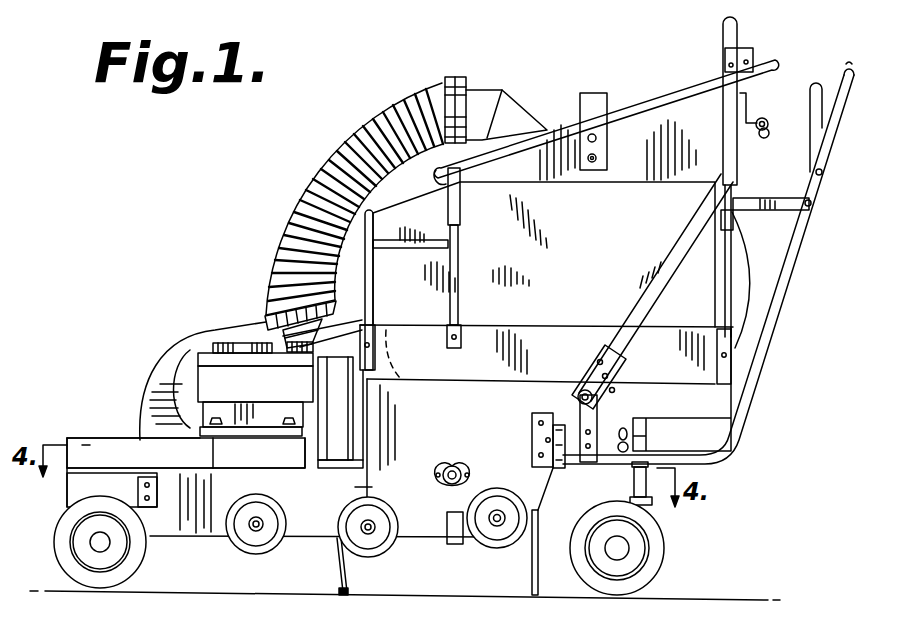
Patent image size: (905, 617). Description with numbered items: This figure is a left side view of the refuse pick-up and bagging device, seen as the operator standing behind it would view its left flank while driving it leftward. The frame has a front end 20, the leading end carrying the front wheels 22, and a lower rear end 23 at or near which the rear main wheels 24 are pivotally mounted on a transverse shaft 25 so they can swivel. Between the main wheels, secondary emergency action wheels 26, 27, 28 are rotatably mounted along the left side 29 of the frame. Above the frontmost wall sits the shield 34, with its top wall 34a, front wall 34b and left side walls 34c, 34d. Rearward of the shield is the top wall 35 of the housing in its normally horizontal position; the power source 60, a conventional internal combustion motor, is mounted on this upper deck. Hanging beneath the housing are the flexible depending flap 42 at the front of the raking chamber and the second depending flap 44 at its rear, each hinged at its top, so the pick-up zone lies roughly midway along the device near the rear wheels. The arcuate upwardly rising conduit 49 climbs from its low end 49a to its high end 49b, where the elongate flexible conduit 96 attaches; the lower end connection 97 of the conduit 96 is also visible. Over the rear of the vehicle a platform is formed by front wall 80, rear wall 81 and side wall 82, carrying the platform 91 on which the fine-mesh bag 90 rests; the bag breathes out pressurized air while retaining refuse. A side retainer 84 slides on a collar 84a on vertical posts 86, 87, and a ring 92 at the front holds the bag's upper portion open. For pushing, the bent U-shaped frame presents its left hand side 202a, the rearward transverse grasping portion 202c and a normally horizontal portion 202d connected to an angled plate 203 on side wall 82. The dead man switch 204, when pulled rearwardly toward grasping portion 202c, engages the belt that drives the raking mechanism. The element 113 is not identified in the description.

The front end 20 is at (66, 497).
The front wheels 22 is at (136, 573).
The lower rear end 23 is at (648, 437).
The rear main wheels 24 is at (664, 570).
The transverse shaft 25 is at (635, 490).
The secondary emergency action wheel 26 is at (247, 495).
The secondary emergency action wheel 27 is at (355, 501).
The secondary emergency action wheel 28 is at (500, 488).
The left side 29 is at (330, 532).
The shield 34 is at (63, 405).
The top wall 34a is at (95, 438).
The front wall 34b is at (66, 438).
The left side wall 34c is at (156, 457).
The left side wall 34d is at (285, 470).
The top wall 35 is at (372, 487).
The depending flap 42 is at (338, 565).
The second depending flap 44 is at (531, 570).
The arcuate upwardly rising conduit 49 is at (178, 356).
The low end 49a is at (181, 430).
The high end 49b is at (262, 320).
The power source 60 is at (259, 384).
The front wall 80 is at (363, 392).
The rear wall 81 is at (736, 402).
The side wall 82 is at (486, 385).
The side retainer 84 is at (581, 338).
The collar 84a is at (378, 342).
The vertical post 86 is at (365, 287).
The vertical post 87 is at (724, 300).
The bag 90 is at (570, 249).
The platform 91 is at (570, 385).
The ring 92 is at (371, 212).
The elongate flexible conduit 96 is at (340, 137).
The connection 97 is at (262, 308).
The handle bar 113 is at (563, 140).
The left hand side 202a is at (780, 320).
The rearward transverse grasping portion 202c is at (848, 70).
The normally horizontal portion 202d is at (592, 470).
The angled plate 203 is at (531, 428).
The dead man switch 204 is at (810, 108).